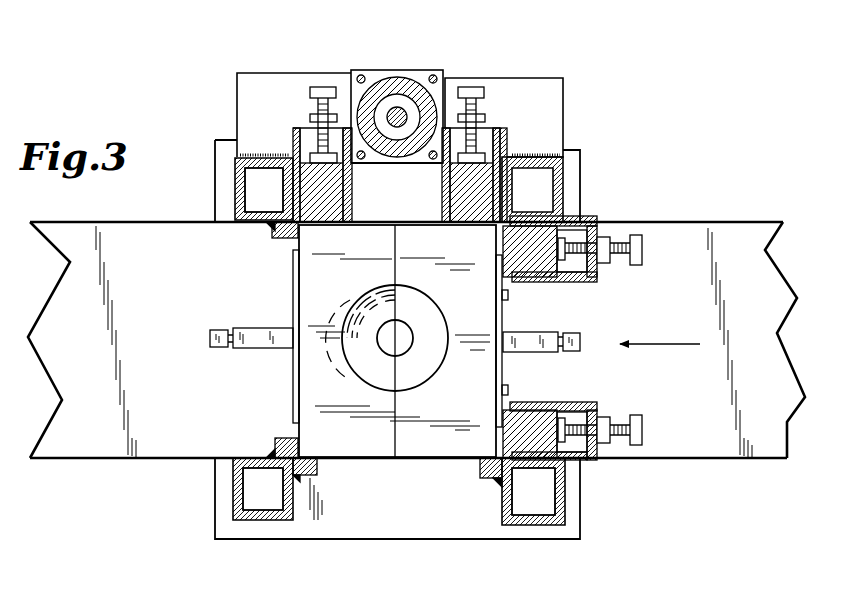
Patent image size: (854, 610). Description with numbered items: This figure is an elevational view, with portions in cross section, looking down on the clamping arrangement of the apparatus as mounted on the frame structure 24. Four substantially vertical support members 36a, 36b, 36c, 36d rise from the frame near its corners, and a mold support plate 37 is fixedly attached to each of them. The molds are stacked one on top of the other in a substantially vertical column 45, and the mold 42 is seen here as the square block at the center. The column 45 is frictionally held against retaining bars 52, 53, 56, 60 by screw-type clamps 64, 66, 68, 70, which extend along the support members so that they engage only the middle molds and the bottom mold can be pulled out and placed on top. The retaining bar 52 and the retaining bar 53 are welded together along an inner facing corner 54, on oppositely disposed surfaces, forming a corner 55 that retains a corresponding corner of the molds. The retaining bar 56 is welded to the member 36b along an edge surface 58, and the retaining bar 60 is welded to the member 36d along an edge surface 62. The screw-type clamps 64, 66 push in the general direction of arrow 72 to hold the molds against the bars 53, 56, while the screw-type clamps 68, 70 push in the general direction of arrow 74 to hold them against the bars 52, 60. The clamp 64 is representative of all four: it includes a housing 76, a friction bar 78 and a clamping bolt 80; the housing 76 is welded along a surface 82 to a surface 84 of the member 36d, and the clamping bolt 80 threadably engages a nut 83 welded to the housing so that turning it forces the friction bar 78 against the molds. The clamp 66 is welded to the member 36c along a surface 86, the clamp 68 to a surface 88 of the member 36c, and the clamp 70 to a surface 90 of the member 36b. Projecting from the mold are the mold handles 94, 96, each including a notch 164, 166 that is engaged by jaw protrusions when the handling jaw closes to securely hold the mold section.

The frame structure 24 is at (521, 543).
The vertical support member 36a is at (268, 521).
The vertical support member 36b is at (553, 524).
The vertical support member 36c is at (565, 176).
The vertical support member 36d is at (240, 177).
The mold support plate 37 is at (407, 528).
The mold 42 is at (487, 315).
The vertical column 45 is at (375, 460).
The retaining bar 52 is at (283, 441).
The retaining bar 53 is at (315, 477).
The inner facing corner 54 is at (289, 462).
The corner 55 is at (301, 453).
The retaining bar 56 is at (490, 479).
The edge surface 58 is at (504, 478).
The retaining bar 60 is at (285, 239).
The edge surface 62 is at (273, 234).
The screw-type clamp 64 is at (296, 120).
The screw-type clamp 66 is at (506, 125).
The screw-type clamp 68 is at (602, 278).
The screw-type clamp 70 is at (601, 402).
The arrow 72 is at (402, 25).
The arrow 74 is at (660, 344).
The housing 76 is at (294, 127).
The friction bar 78 is at (315, 212).
The clamping bolt 80 is at (339, 94).
The surface 82 is at (292, 201).
The nut 83 is at (360, 160).
The surface 84 is at (290, 155).
The surface 86 is at (481, 213).
The surface 88 is at (582, 220).
The surface 90 is at (575, 450).
The mold handle 94 is at (256, 343).
The mold handle 96 is at (546, 338).
The notch 164 is at (232, 328).
The notch 166 is at (564, 351).